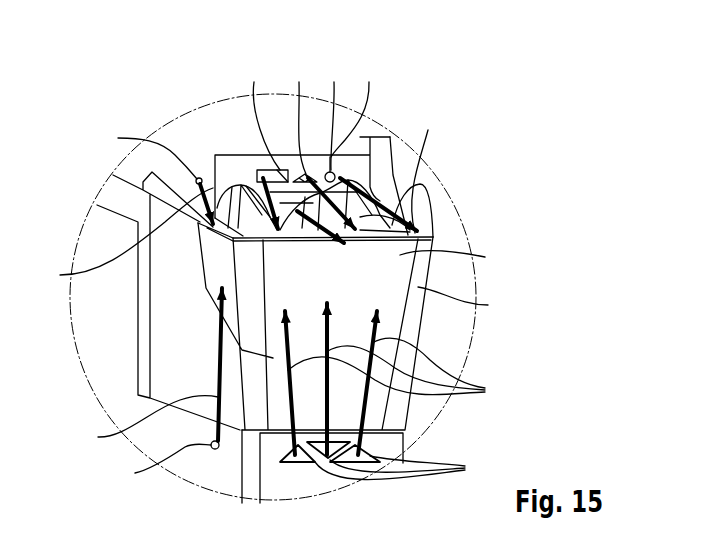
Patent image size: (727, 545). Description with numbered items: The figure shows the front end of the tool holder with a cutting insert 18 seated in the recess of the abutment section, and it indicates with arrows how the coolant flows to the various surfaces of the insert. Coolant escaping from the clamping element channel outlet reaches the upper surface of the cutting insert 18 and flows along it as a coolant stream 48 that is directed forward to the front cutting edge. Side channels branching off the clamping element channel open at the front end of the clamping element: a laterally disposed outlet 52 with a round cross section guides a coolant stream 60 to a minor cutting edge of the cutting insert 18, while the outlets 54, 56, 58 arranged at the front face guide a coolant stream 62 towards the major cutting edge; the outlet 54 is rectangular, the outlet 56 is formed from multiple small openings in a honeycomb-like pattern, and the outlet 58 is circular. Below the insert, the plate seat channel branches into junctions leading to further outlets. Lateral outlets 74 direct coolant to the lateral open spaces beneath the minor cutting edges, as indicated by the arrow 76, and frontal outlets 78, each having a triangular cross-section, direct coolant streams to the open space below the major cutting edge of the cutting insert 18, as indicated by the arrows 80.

The cutting insert 18 is at (357, 326).
The coolant stream 48 is at (356, 247).
The laterally disposed outlet 52 is at (152, 175).
The outlet 54 is at (321, 143).
The outlet 56 is at (337, 120).
The outlet 58 is at (302, 138).
The coolant stream 60 is at (136, 301).
The coolant stream 62 is at (345, 150).
The lateral outlet 74 is at (162, 464).
The arrow 76 is at (147, 370).
The frontal outlet 78 is at (384, 461).
The arrow 80 is at (398, 379).